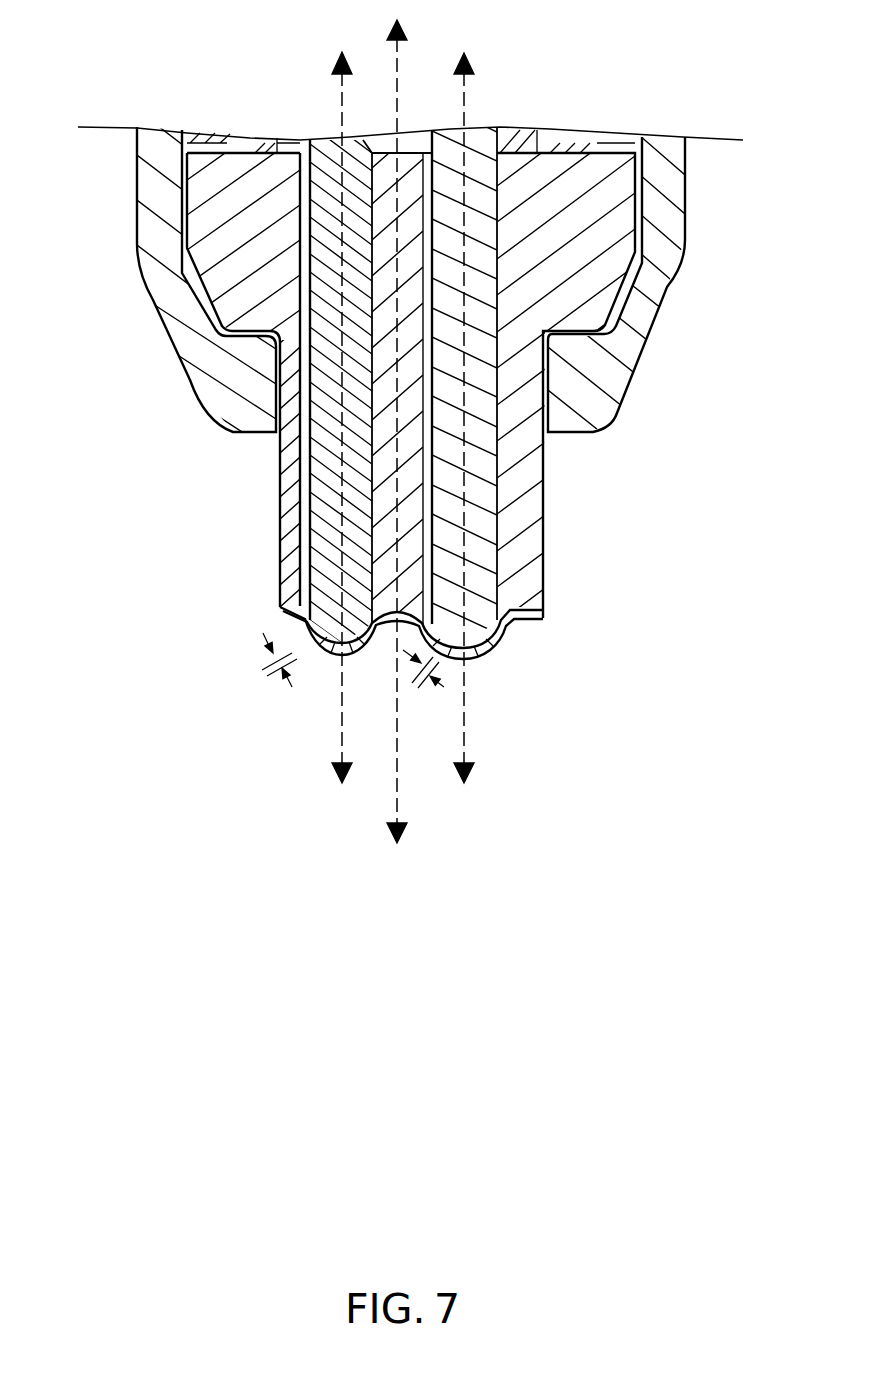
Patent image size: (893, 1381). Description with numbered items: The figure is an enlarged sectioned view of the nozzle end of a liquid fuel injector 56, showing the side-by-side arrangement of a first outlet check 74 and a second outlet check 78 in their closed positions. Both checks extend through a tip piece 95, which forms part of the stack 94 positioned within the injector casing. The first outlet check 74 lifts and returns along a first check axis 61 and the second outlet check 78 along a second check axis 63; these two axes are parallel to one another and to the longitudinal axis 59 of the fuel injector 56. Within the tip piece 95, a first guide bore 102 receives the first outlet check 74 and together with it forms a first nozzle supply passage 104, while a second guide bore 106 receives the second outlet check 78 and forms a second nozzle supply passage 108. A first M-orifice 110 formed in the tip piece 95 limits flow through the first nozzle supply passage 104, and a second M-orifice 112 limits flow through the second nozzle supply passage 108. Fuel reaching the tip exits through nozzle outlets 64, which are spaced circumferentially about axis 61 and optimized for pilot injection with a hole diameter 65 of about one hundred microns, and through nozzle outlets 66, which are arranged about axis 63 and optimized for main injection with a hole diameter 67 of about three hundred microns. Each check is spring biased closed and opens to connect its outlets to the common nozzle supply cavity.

The fuel injector 56 is at (692, 401).
The longitudinal axis 59 is at (399, 811).
The first check axis 61 is at (341, 752).
The second check axis 63 is at (466, 752).
The nozzle outlets 64 is at (308, 647).
The hole diameter 65 is at (258, 673).
The nozzle outlets 66 is at (492, 653).
The hole diameter 67 is at (418, 680).
The first outlet check 74 is at (320, 477).
The second outlet check 78 is at (490, 528).
The stack 94 is at (656, 219).
The tip piece 95 is at (202, 197).
The first guide bore 102 is at (305, 180).
The first nozzle supply passage 104 is at (300, 415).
The second guide bore 106 is at (427, 185).
The second nozzle supply passage 108 is at (427, 423).
The first M-orifice 110 is at (293, 309).
The second M-orifice 112 is at (436, 289).